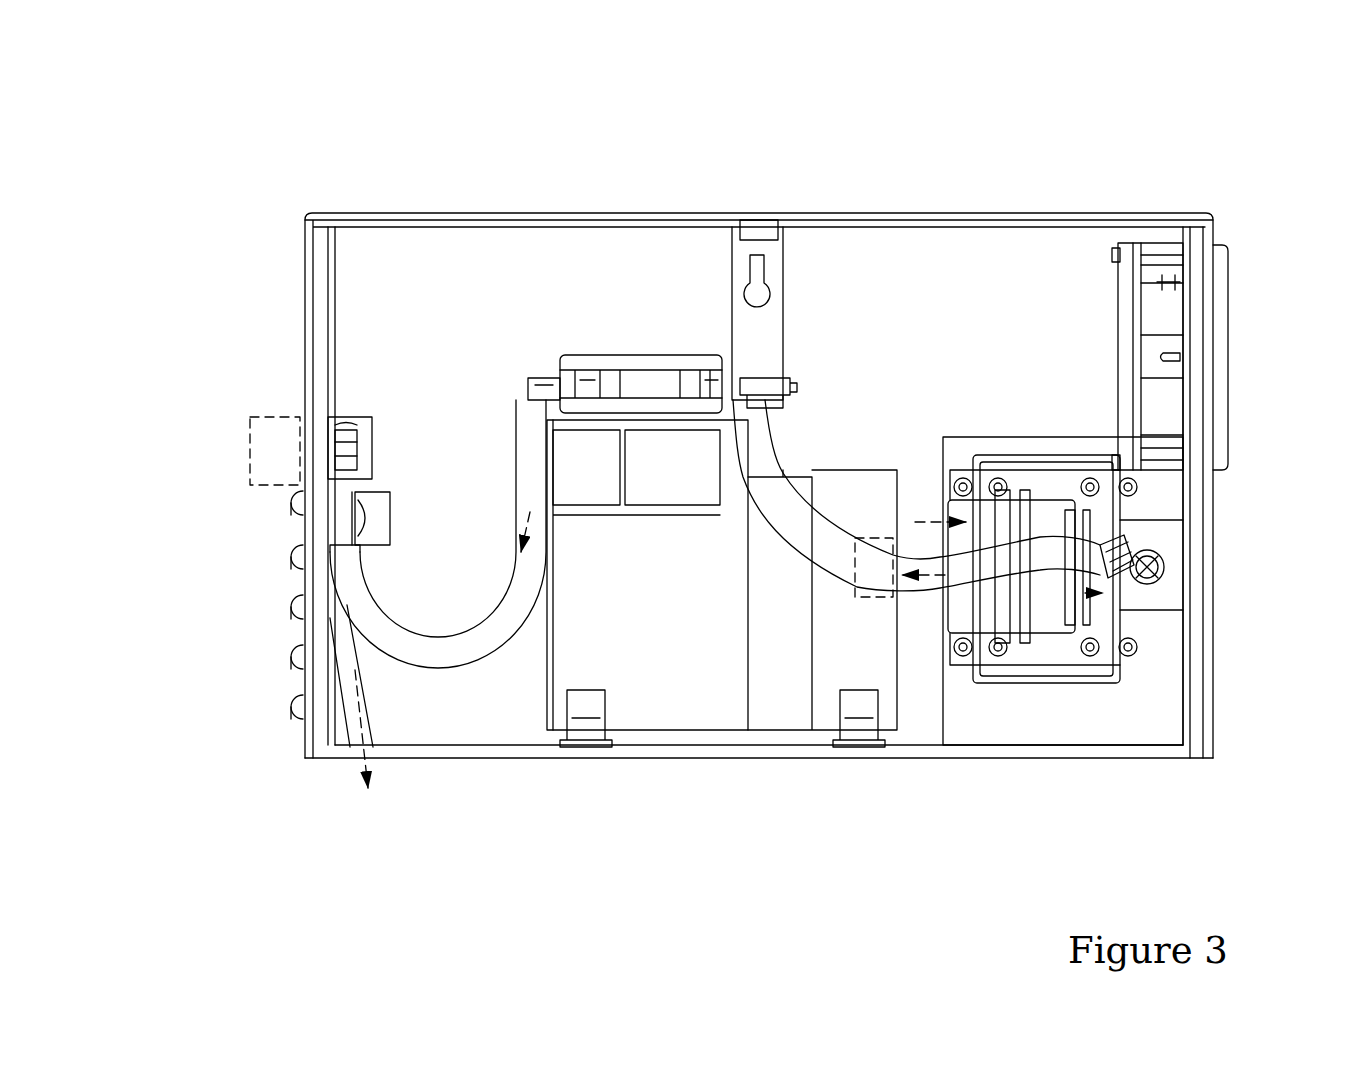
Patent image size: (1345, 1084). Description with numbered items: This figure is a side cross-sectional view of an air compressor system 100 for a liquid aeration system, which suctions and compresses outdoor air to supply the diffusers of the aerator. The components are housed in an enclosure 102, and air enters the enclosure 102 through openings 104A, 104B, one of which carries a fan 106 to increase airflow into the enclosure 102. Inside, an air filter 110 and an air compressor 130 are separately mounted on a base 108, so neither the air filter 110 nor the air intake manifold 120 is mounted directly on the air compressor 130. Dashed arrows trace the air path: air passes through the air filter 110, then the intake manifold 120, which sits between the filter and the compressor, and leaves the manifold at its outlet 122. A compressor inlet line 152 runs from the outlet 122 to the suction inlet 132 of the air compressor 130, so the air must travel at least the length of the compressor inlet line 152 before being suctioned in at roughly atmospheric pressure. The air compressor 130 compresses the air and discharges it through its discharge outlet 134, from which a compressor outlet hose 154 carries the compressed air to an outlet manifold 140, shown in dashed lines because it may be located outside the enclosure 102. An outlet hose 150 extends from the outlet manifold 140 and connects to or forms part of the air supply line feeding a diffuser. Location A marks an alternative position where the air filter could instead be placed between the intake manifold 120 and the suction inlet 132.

The air compressor system 100 is at (262, 165).
The enclosure 102 is at (1108, 213).
The opening 104A is at (398, 555).
The opening 104B is at (1213, 290).
The fan 106 is at (1158, 245).
The base 108 is at (1150, 758).
The air filter 110 is at (1030, 652).
The air intake manifold 120 is at (1164, 622).
The outlet 122 is at (1165, 568).
The air compressor 130 is at (805, 395).
The suction inlet 132 is at (765, 388).
The discharge outlet 134 is at (540, 388).
The outlet manifold 140 is at (318, 413).
The outlet hose 150 is at (335, 718).
The compressor inlet line 152 is at (805, 525).
The compressor outlet hose 154 is at (455, 655).
The location A is at (882, 600).